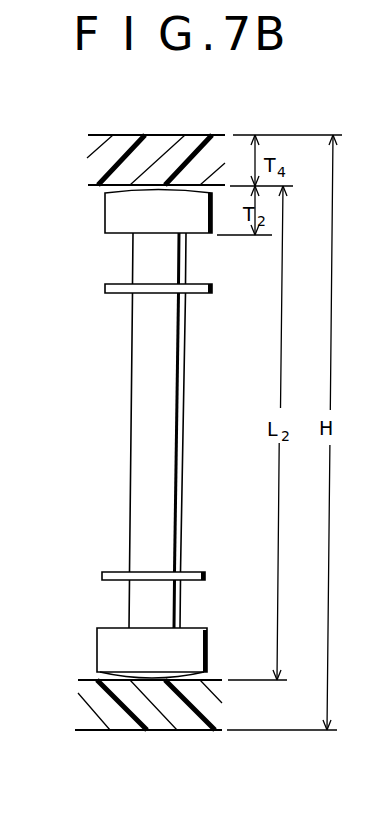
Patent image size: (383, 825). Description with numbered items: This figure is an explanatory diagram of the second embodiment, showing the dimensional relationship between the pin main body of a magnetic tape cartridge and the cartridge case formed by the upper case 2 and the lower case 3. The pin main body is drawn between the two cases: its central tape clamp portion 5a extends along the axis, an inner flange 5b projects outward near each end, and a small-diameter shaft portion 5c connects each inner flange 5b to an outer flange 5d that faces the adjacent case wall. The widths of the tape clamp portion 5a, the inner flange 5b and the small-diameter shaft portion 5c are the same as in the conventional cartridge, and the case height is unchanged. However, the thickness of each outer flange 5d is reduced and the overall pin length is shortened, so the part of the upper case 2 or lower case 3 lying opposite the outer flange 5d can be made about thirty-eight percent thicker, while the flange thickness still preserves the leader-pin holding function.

The upper case 2 is at (189, 150).
The lower case 3 is at (168, 722).
The tape clamp portion 5a is at (138, 432).
The inner flange 5b is at (105, 288).
The small-diameter shaft portion 5c is at (140, 263).
The outer flange 5d is at (115, 212).